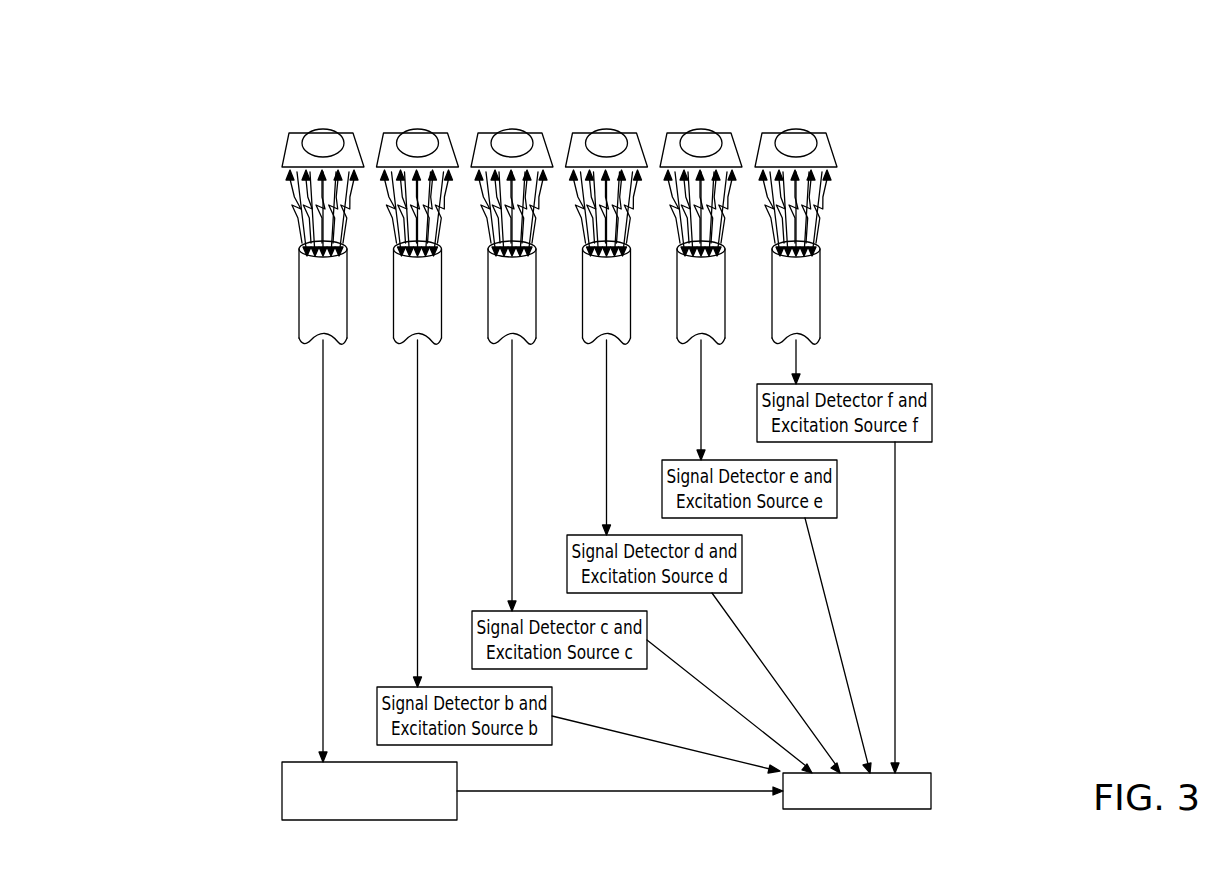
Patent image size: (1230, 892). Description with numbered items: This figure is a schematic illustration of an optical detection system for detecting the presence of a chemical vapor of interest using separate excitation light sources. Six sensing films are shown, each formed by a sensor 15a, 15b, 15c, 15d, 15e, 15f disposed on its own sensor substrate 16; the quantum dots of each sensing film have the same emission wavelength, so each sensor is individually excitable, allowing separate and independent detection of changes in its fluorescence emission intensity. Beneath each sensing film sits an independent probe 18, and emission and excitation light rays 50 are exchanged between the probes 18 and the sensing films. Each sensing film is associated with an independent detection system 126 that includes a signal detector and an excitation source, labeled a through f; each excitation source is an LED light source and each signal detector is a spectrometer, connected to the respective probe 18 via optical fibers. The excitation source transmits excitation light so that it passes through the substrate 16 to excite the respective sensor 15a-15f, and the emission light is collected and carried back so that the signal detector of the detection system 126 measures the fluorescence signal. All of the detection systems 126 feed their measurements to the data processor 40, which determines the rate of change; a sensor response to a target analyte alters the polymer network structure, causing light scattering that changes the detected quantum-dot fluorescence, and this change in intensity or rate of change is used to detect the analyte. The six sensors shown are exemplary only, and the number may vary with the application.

The sensor 15a is at (321, 135).
The sensor 15b is at (415, 135).
The sensor 15c is at (510, 135).
The sensor 15d is at (604, 135).
The sensor 15e is at (699, 135).
The sensor 15f is at (794, 135).
The sensor substrate 16 is at (296, 140).
The probe 18 is at (298, 278).
The emission and excitation light rays 50 is at (296, 208).
The detection system 126 is at (282, 790).
The data processor 40 is at (931, 791).